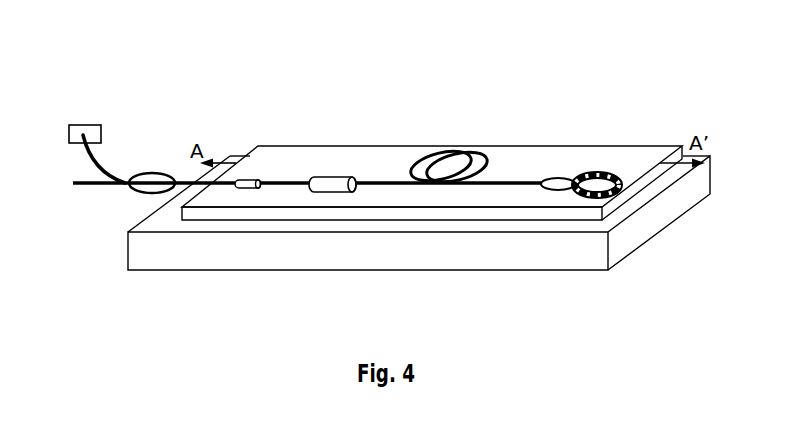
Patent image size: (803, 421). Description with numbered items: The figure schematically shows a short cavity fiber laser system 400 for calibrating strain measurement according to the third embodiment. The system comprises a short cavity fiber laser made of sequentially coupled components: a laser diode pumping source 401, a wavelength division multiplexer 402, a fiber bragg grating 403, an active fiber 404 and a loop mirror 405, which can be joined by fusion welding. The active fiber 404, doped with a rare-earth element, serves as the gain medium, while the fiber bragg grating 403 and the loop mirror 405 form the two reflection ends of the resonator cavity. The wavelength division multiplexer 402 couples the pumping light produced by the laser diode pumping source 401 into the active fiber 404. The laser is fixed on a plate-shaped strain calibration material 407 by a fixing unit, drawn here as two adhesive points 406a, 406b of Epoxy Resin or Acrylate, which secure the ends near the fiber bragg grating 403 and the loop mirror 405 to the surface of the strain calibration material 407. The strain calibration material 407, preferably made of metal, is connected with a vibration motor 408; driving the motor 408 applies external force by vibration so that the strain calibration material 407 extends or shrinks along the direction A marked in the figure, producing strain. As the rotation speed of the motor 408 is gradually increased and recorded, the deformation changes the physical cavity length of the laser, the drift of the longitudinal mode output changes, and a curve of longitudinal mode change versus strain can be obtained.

The short cavity fiber laser system 400 is at (565, 49).
The laser diode pumping source 401 is at (95, 127).
The wavelength division multiplexer 402 is at (140, 189).
The fiber bragg grating 403 is at (333, 177).
The active fiber 404 is at (453, 152).
The loop mirror 405 is at (563, 180).
The fixing unit 406a is at (257, 185).
The fixing unit 406b is at (597, 175).
The strain calibration material 407 is at (263, 165).
The vibration motor 408 is at (435, 253).